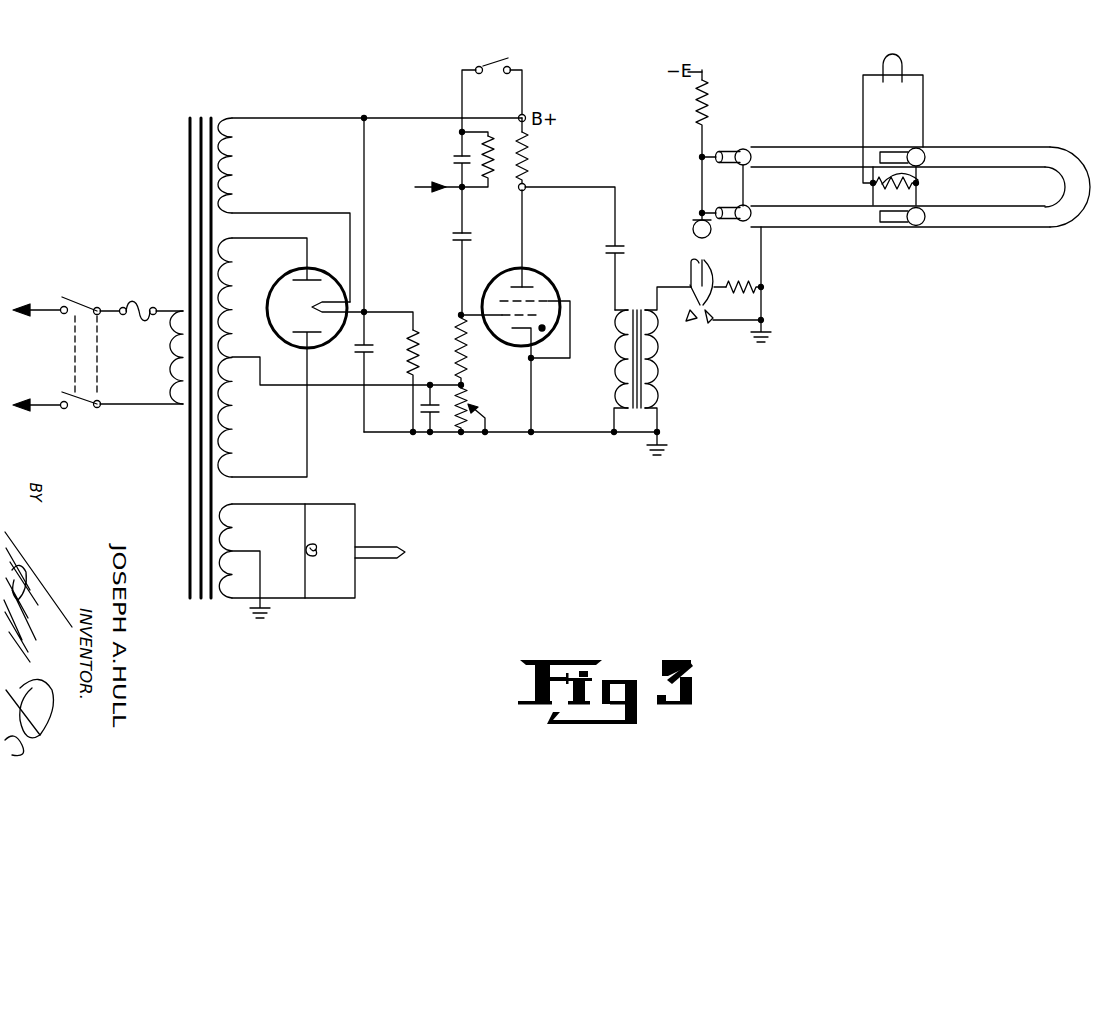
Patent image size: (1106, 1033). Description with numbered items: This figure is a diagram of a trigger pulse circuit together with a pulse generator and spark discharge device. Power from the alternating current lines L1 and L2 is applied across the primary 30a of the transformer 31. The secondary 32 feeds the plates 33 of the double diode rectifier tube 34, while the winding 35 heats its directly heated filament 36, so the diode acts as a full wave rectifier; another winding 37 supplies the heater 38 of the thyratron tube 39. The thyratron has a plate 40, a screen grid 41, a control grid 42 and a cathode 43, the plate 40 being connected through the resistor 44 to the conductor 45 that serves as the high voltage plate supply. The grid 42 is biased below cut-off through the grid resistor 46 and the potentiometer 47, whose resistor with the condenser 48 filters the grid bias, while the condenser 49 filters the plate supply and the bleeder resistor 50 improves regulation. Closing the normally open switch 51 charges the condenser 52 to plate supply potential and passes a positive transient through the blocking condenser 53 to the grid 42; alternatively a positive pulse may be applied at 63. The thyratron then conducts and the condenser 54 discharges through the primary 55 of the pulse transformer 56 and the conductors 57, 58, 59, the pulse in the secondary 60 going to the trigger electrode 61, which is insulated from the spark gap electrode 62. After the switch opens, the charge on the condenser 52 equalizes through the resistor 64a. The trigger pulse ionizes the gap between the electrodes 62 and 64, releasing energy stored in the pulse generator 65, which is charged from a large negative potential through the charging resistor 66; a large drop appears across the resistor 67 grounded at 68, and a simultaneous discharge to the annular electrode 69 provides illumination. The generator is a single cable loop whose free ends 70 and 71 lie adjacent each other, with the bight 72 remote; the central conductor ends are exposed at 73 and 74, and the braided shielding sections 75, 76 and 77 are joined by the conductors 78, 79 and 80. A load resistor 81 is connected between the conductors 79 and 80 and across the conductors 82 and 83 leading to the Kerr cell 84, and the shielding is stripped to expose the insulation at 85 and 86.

The primary 30a is at (173, 362).
The transformer 31 is at (189, 450).
The secondary 32 is at (232, 442).
The plates 33 is at (306, 283).
The double diode rectifier tube 34 is at (324, 342).
The winding 35 is at (231, 146).
The directly heated filament 36 is at (332, 300).
The winding 37 is at (232, 551).
The heater 38 is at (369, 549).
The thyratron tube 39 is at (558, 292).
The plate 40 is at (528, 286).
The screen grid 41 is at (518, 300).
The control grid 42 is at (507, 317).
The cathode 43 is at (524, 331).
The resistor 44 is at (529, 167).
The conductor 45 is at (464, 118).
The grid resistor 46 is at (461, 366).
The potentiometer 47 is at (470, 428).
The condenser 48 is at (437, 420).
The condenser 49 is at (367, 350).
The bleeder resistor 50 is at (409, 352).
The normally open switch 51 is at (498, 63).
The condenser 52 is at (458, 156).
The blocking condenser 53 is at (469, 237).
The condenser 54 is at (622, 249).
The primary 55 is at (620, 364).
The pulse transformer 56 is at (633, 313).
The conductor 57 is at (524, 200).
The conductor 58 is at (531, 372).
The conductor 59 is at (548, 433).
The secondary 60 is at (651, 330).
The trigger electrode 61 is at (689, 267).
The spark gap electrode 62 is at (713, 273).
The positive pulse input 63 is at (428, 190).
The spark discharge electrode 64 is at (709, 231).
The resistor 64a is at (488, 172).
The pulse generator 65 is at (793, 227).
The charging resistor 66 is at (706, 76).
The resistor 67 is at (737, 292).
The ground 68 is at (765, 331).
The annular electrode 69 is at (710, 323).
The cable end 70 is at (731, 152).
The cable end 71 is at (735, 208).
The bight 72 is at (1062, 190).
The exposed central conductor end 73 is at (709, 156).
The exposed central conductor end 74 is at (703, 207).
The shielding section 75 is at (835, 147).
The shielding section 76 is at (840, 207).
The shielding section 77 is at (985, 168).
The conductor 78 is at (745, 175).
The conductor 79 is at (872, 199).
The conductor 80 is at (914, 224).
The load resistor 81 is at (918, 180).
The conductor 82 is at (863, 100).
The conductor 83 is at (925, 105).
The Kerr cell 84 is at (889, 58).
The exposed insulation 85 is at (900, 150).
The exposed insulation 86 is at (880, 226).
The alternating current line L1 is at (37, 308).
The alternating current line L2 is at (37, 408).